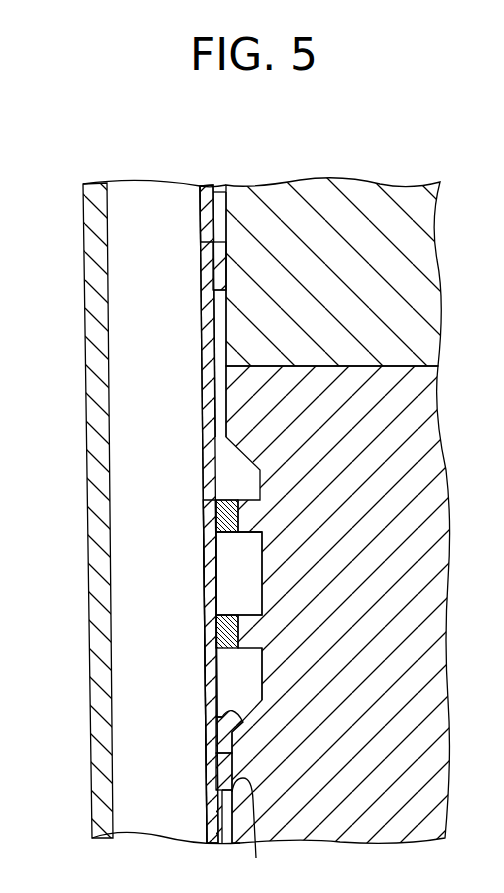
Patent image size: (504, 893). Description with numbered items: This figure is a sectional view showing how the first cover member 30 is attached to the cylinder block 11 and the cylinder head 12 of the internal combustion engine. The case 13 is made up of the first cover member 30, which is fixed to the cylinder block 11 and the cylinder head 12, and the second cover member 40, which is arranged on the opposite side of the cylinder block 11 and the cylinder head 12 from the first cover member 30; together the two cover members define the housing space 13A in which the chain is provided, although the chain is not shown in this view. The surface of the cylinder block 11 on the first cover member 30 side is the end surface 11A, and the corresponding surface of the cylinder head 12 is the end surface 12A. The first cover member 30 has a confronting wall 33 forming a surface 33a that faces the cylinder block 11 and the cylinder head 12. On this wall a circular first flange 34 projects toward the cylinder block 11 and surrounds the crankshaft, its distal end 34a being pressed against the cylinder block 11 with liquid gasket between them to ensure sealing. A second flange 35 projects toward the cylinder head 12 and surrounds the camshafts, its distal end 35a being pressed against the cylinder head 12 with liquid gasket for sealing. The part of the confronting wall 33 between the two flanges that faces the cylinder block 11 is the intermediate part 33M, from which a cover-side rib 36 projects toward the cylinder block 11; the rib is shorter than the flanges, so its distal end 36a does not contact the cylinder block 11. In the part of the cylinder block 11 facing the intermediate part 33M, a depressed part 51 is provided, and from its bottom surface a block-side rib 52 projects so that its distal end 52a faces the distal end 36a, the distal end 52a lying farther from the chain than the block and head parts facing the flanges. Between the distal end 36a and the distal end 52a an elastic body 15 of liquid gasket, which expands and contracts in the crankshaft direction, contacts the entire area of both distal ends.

The cylinder block 11 is at (448, 482).
The end surface of the cylinder block 11A is at (220, 402).
The cylinder head 12 is at (440, 262).
The end surface of the cylinder head 12A is at (214, 190).
The case 13 is at (69, 140).
The housing space 13A is at (172, 368).
The elastic body 15 is at (218, 514).
The first cover member 30 is at (200, 207).
The confronting wall 33 is at (204, 446).
The surface of the confronting wall 33a is at (222, 330).
The intermediate part 33M is at (206, 575).
The first flange 34 is at (248, 759).
The distal end of the first flange 34a is at (246, 831).
The second flange 35 is at (228, 262).
The distal end of the second flange 35a is at (228, 290).
The cover-side rib 36 is at (215, 537).
The distal end of the cover-side rib 36a is at (228, 498).
The second cover member 40 is at (85, 366).
The depressed part 51 is at (221, 717).
The block-side rib 52 is at (263, 537).
The distal end of the block-side rib 52a is at (239, 552).